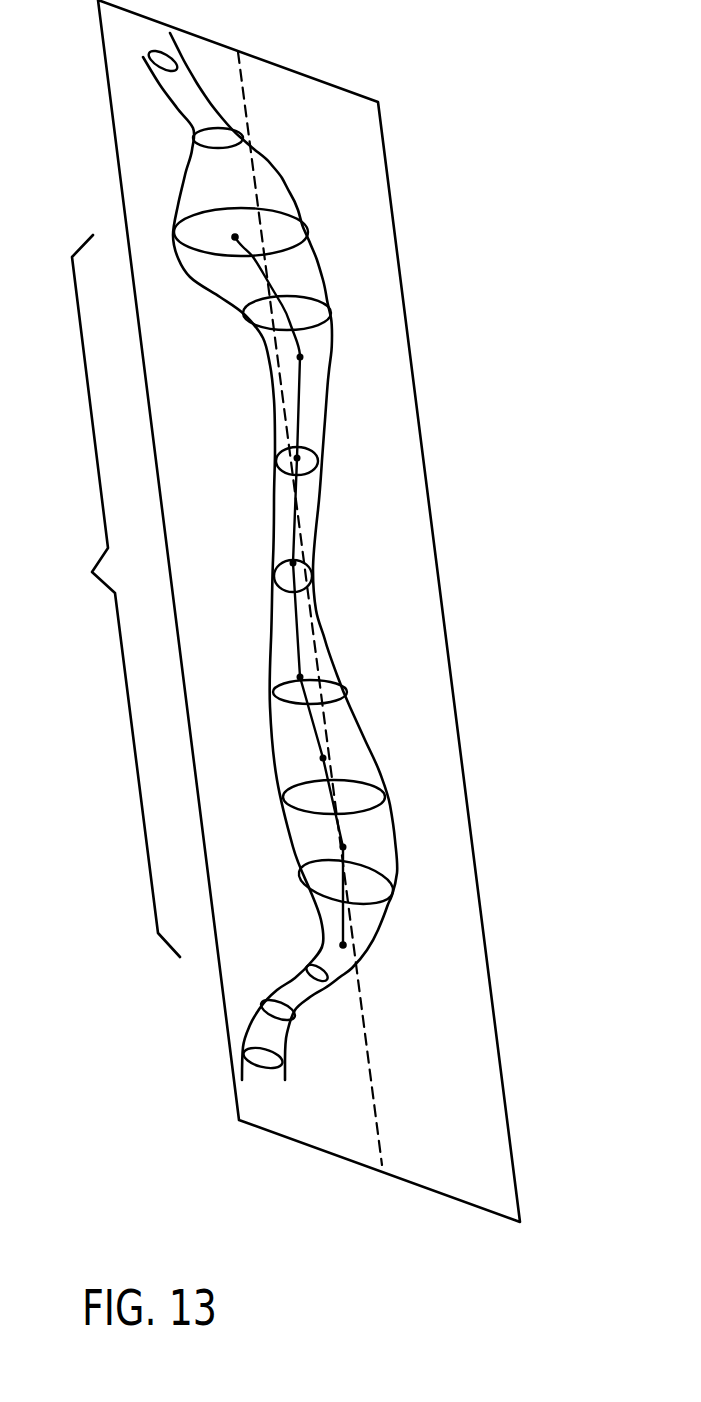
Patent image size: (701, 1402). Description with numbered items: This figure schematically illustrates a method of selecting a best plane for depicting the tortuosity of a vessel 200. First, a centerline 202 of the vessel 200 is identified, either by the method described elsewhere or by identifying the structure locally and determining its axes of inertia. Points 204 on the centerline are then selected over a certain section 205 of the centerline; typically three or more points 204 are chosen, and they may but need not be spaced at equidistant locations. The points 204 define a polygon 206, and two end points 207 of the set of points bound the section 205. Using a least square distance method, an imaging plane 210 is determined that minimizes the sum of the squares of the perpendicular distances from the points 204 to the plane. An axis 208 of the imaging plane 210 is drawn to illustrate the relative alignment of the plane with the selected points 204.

The vessel 200 is at (271, 162).
The centerline 202 is at (283, 276).
The points 204 is at (322, 692).
The section 205 is at (111, 596).
The polygon 206 is at (254, 268).
The end points 207 is at (237, 236).
The axis 208 is at (369, 1072).
The imaging plane 210 is at (430, 498).